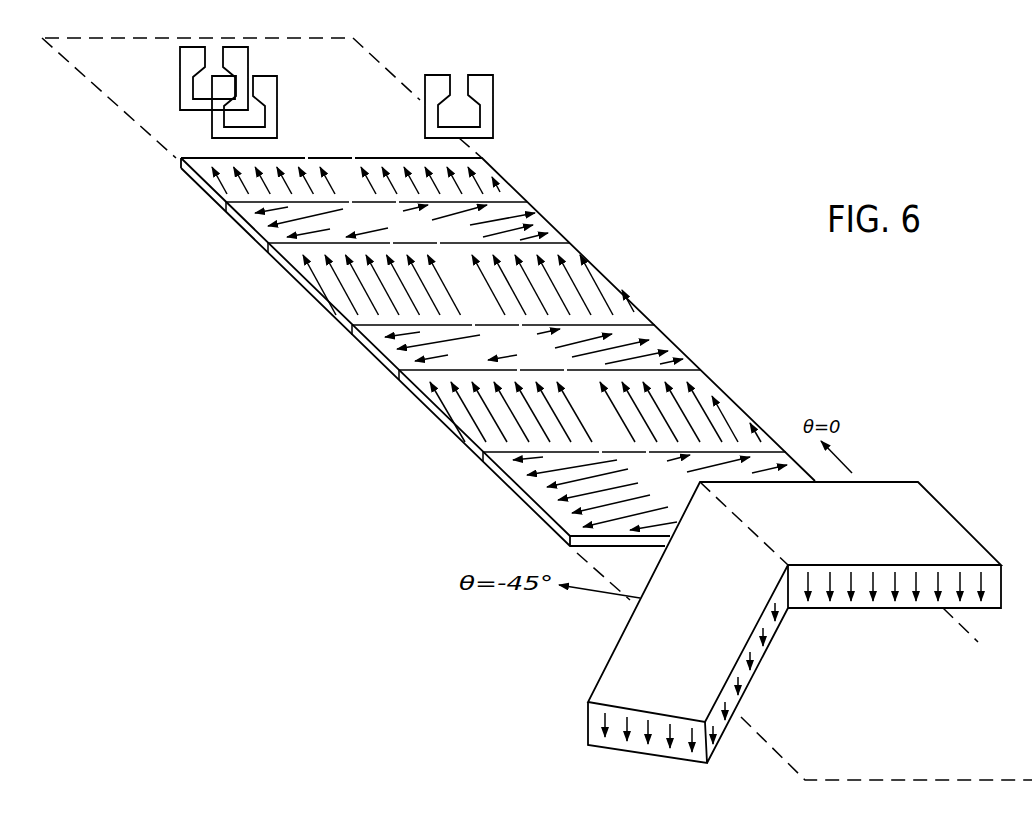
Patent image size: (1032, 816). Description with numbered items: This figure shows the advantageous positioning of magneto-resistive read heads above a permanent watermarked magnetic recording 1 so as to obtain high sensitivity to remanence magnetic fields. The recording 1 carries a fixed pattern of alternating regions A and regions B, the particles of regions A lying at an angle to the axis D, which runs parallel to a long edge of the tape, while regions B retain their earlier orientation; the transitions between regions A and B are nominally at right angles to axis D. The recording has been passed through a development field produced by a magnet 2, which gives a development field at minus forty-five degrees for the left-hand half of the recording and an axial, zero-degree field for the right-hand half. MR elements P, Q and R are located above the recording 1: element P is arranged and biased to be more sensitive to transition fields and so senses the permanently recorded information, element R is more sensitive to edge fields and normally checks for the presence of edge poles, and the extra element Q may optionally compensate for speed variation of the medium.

The permanent watermarked magnetic recording 1 is at (370, 356).
The magnet 2 is at (718, 599).
The regions A is at (500, 190).
The regions B is at (547, 213).
The MR element Q is at (180, 84).
The MR element P is at (277, 113).
The MR element R is at (425, 92).
The axis D is at (841, 815).